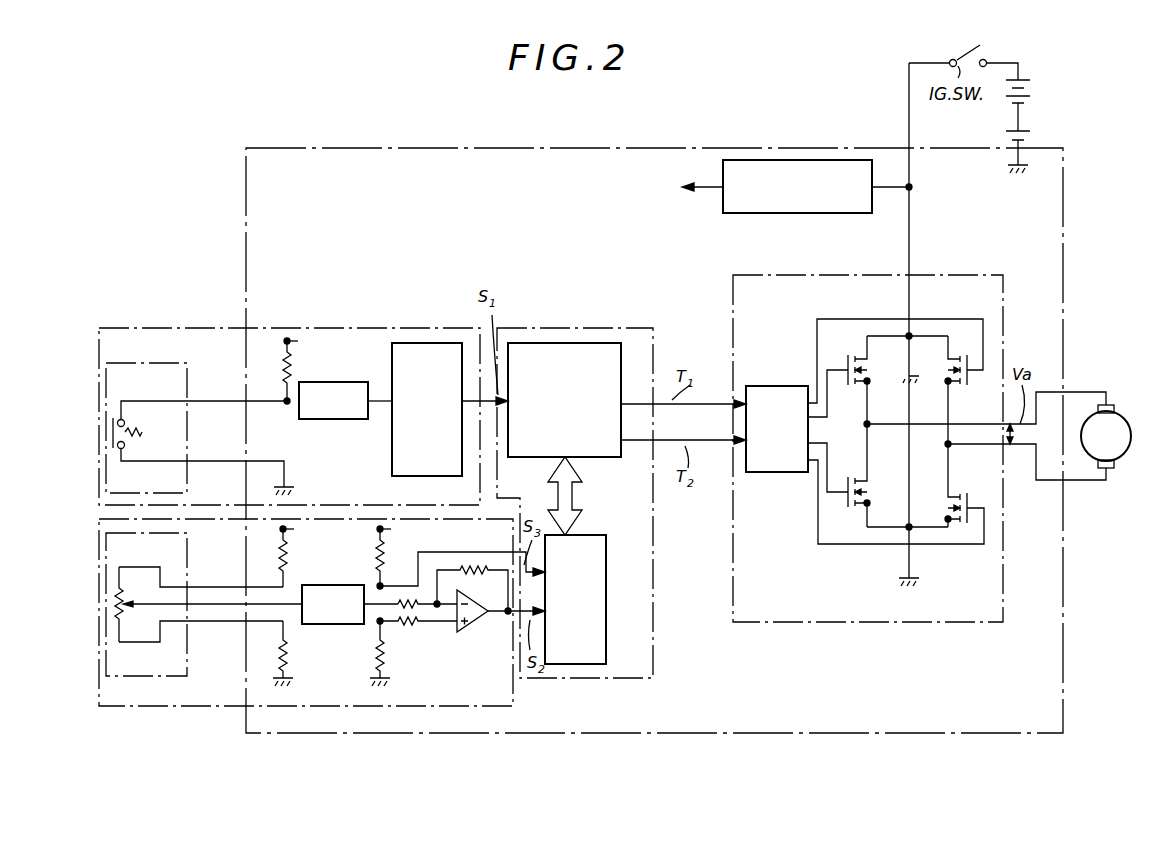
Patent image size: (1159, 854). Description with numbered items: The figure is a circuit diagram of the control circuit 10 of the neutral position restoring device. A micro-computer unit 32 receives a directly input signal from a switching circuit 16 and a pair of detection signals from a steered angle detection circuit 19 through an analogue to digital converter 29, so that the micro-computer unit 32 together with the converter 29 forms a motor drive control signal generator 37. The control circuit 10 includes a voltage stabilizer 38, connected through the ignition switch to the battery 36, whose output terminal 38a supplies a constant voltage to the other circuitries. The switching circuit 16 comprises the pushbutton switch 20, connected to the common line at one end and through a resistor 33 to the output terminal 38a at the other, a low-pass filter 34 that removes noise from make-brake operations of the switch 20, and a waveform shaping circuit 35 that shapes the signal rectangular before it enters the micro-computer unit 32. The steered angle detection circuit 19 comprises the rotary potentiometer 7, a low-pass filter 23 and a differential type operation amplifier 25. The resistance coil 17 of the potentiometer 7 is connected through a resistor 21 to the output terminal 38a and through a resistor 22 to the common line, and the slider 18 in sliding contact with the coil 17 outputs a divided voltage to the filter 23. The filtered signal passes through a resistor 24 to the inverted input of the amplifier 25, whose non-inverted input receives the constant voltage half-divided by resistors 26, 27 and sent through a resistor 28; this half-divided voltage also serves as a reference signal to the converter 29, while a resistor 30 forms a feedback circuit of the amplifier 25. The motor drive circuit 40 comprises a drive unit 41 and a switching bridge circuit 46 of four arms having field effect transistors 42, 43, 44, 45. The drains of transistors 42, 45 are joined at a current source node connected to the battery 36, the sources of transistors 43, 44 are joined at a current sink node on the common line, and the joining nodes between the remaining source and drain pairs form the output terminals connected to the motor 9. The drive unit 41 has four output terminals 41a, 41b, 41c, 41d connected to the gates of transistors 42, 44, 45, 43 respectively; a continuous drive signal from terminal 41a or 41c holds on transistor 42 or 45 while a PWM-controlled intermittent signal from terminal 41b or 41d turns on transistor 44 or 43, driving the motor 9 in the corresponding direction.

The rotary potentiometer 7 is at (122, 676).
The motor 9 is at (1124, 414).
The control circuit 10 is at (412, 148).
The switching circuit 16 is at (160, 328).
The resistance coil 17 is at (118, 622).
The slider 18 is at (147, 603).
The steered angle detection circuit 19 is at (191, 706).
The pushbutton switch 20 is at (190, 373).
The resistor 21 is at (281, 562).
The resistor 22 is at (287, 650).
The low-pass filter 23 is at (337, 585).
The resistor 24 is at (410, 610).
The differential type operation amplifier 25 is at (476, 625).
The resistor 26 is at (384, 556).
The resistor 27 is at (378, 652).
The resistor 28 is at (420, 625).
The analogue to digital converter 29 is at (606, 568).
The resistor 30 is at (472, 588).
The micro-computer unit 32 is at (540, 457).
The resistor 33 is at (285, 372).
The low-pass filter 34 is at (334, 419).
The waveform shaping circuit 35 is at (392, 478).
The battery 36 is at (1031, 89).
The motor drive control signal generator 37 is at (578, 328).
The voltage stabilizer 38 is at (782, 213).
The output terminal 38a is at (705, 192).
The motor drive circuit 40 is at (945, 622).
The drive unit 41 is at (772, 386).
The output terminal 41a is at (815, 345).
The output terminal 41b is at (838, 505).
The output terminal 41c is at (822, 405).
The output terminal 41d is at (818, 498).
The field effect transistor 42 is at (972, 385).
The field effect transistor 43 is at (975, 492).
The field effect transistor 44 is at (850, 485).
The field effect transistor 45 is at (851, 380).
The switching bridge circuit 46 is at (803, 540).